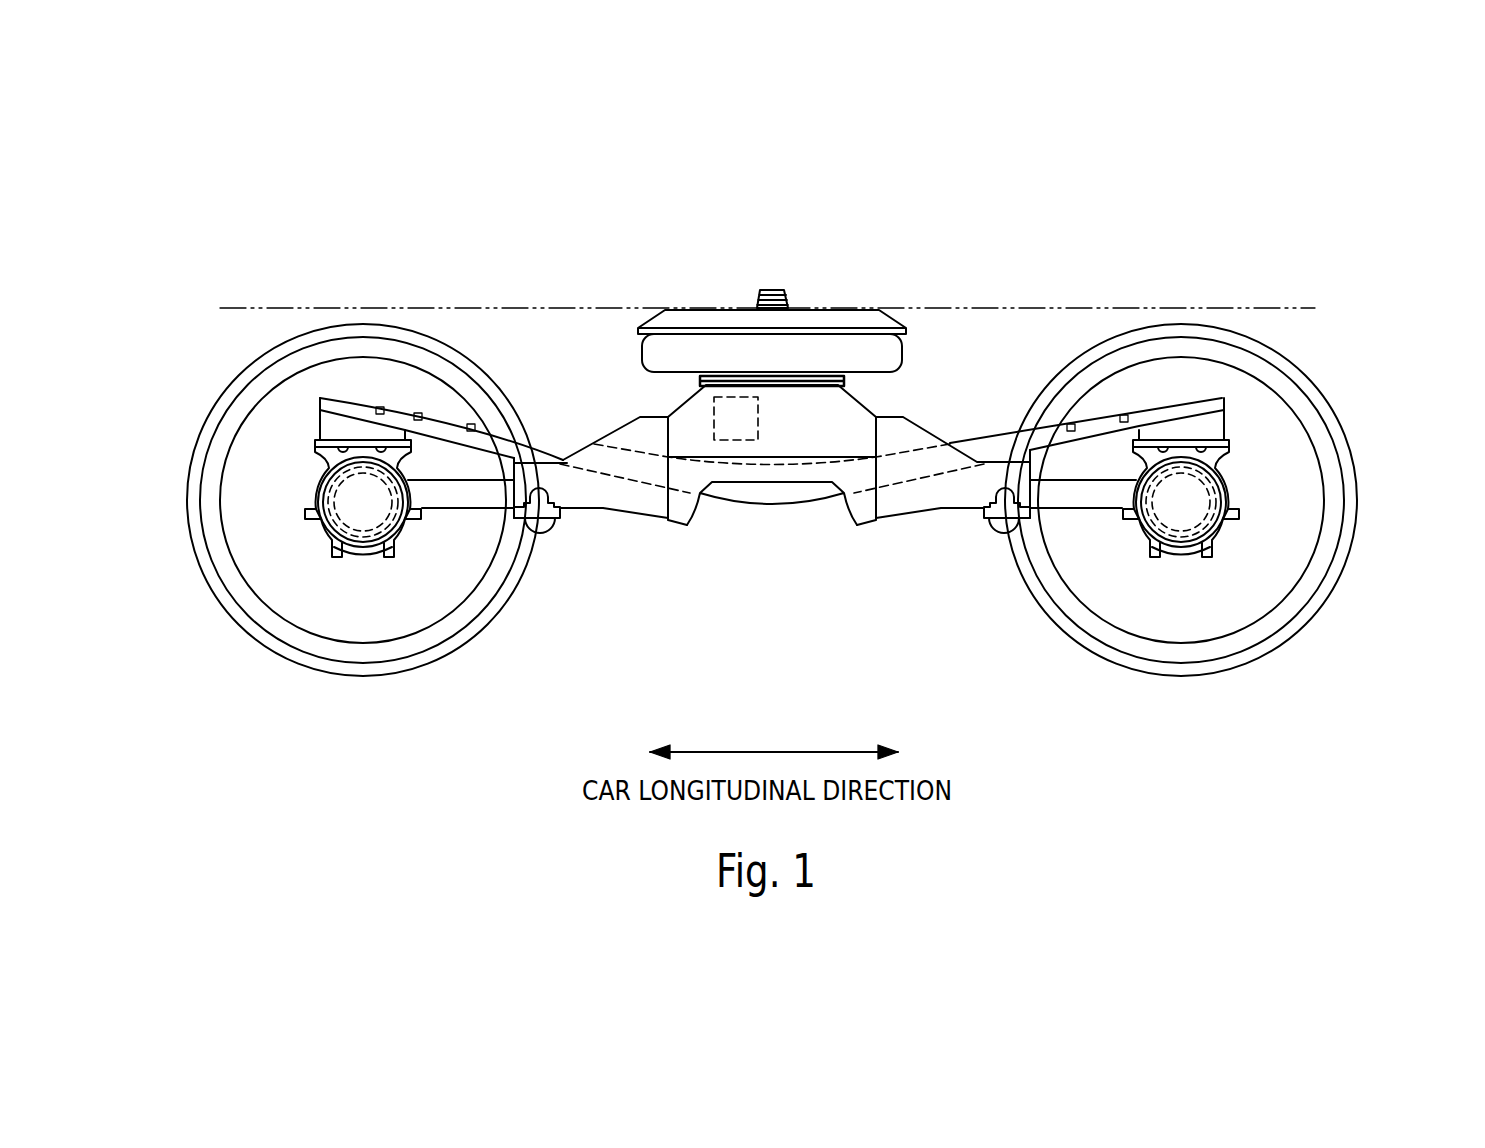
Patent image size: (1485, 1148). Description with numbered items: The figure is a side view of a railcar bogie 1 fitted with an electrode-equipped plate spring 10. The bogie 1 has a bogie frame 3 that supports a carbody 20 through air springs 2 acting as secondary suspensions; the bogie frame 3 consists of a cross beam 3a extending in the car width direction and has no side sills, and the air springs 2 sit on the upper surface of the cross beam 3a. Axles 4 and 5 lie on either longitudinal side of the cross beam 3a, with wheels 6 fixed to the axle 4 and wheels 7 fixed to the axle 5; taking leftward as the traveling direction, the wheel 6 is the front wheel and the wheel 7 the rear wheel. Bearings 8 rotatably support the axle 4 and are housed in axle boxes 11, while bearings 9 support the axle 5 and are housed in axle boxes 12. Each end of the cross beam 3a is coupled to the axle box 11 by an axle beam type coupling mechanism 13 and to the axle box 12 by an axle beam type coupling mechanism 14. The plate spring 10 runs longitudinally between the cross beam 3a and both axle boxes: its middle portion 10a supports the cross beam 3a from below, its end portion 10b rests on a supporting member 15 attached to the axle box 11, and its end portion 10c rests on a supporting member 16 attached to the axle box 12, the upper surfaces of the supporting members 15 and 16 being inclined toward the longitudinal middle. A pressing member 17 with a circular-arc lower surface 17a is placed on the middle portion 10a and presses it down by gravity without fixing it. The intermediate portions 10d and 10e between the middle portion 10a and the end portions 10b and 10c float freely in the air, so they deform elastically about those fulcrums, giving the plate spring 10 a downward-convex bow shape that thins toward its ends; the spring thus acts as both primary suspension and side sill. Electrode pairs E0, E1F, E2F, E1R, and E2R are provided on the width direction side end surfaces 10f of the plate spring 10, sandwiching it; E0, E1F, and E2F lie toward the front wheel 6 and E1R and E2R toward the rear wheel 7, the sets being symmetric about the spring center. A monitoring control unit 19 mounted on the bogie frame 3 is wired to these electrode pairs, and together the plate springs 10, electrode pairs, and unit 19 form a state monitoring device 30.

The railcar bogie 1 is at (248, 326).
The air spring 2 is at (866, 313).
The bogie frame 3 is at (879, 401).
The cross beam 3a is at (685, 400).
The axle 4 is at (327, 533).
The axle 5 is at (1228, 535).
The wheel 6 is at (237, 370).
The wheel 7 is at (1357, 467).
The bearing 8 is at (370, 553).
The bearing 9 is at (1176, 555).
The electrode-equipped plate spring 10 is at (986, 425).
The longitudinal direction middle portion 10a is at (772, 507).
The longitudinal direction end portion 10b is at (376, 398).
The longitudinal direction end portion 10c is at (1180, 413).
The intermediate portion 10d is at (545, 437).
The intermediate portion 10e is at (1048, 425).
The width direction side end surface 10f is at (571, 455).
The axle box 11 is at (305, 512).
The axle box 12 is at (1237, 505).
The axle beam type coupling mechanism 13 is at (552, 540).
The axle beam type coupling mechanism 14 is at (961, 536).
The supporting member 15 is at (320, 428).
The supporting member 16 is at (1226, 436).
The pressing member 17 is at (791, 456).
The circular-arc lower surface 17a is at (747, 467).
The monitoring control unit 19 is at (737, 397).
The carbody 20 is at (1297, 309).
The state monitoring device 30 is at (667, 249).
The electrode pair E0 is at (381, 407).
The electrode pair E1F is at (419, 413).
The electrode pair E2F is at (471, 424).
The electrode pair E2R is at (1071, 424).
The electrode pair E1R is at (1124, 415).